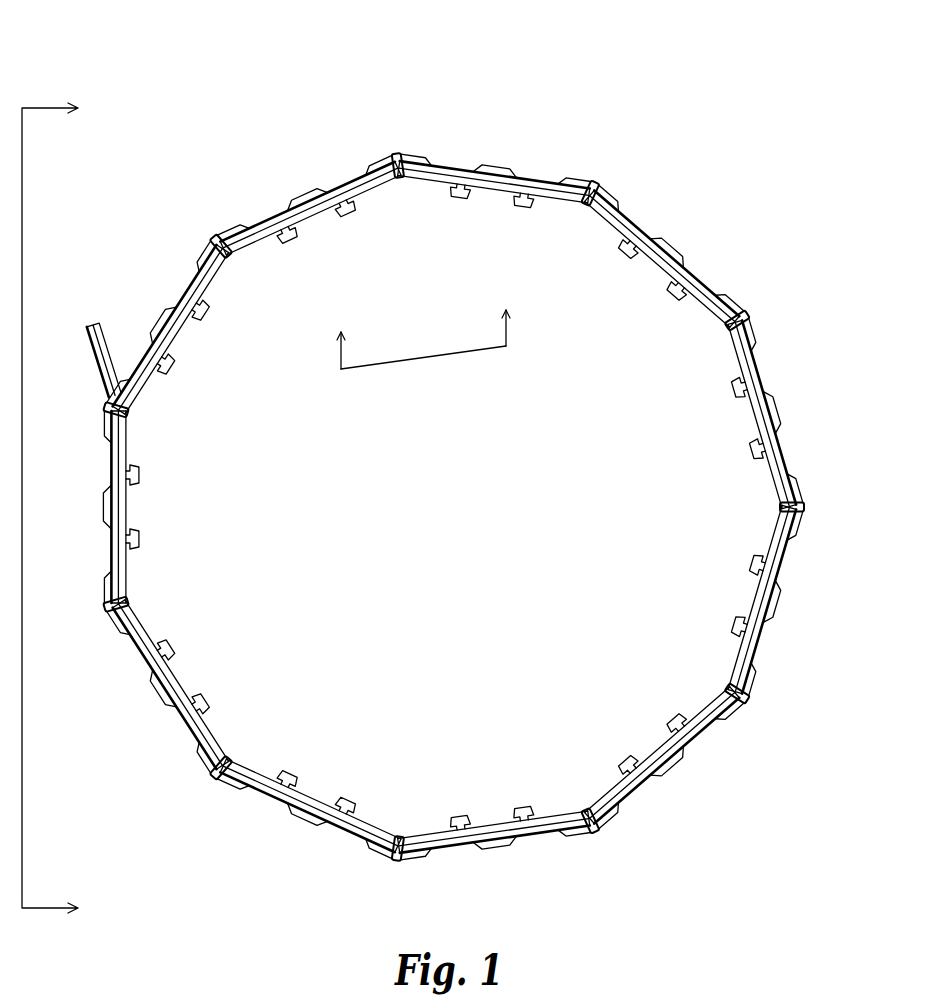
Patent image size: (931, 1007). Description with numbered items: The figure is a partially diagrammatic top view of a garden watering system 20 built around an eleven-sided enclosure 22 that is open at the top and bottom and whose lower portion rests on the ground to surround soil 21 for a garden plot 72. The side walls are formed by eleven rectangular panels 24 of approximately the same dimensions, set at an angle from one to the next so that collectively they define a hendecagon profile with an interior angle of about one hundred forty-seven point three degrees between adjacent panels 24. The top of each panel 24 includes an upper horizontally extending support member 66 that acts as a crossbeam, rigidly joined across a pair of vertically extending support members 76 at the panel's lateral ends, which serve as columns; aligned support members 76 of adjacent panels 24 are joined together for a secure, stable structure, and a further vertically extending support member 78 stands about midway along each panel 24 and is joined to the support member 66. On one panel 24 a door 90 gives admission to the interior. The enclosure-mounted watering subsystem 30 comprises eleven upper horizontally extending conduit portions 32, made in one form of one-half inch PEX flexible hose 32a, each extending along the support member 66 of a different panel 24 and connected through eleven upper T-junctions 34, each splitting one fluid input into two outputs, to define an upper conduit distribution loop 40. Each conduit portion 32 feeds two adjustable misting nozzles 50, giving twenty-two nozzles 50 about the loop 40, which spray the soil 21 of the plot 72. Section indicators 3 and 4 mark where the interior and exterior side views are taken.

The system 20 is at (633, 99).
The soil 21 is at (436, 558).
The enclosure 22 is at (624, 205).
The panel 24 is at (445, 176).
The watering subsystem 30 is at (420, 220).
The upper horizontally extending conduit portion 32 is at (345, 212).
The PEX flexible hose 32a is at (435, 168).
The upper T-junction 34 is at (408, 165).
The upper conduit distribution loop 40 is at (618, 758).
The misting nozzle 50 is at (520, 218).
The upper horizontally extending support member 66 is at (565, 178).
The garden plot 72 is at (554, 617).
The vertically extending support member 76 is at (395, 162).
The vertically extending support member 78 is at (493, 168).
The door 90 is at (95, 332).
The section line 3 is at (418, 325).
The section line 4 is at (58, 511).